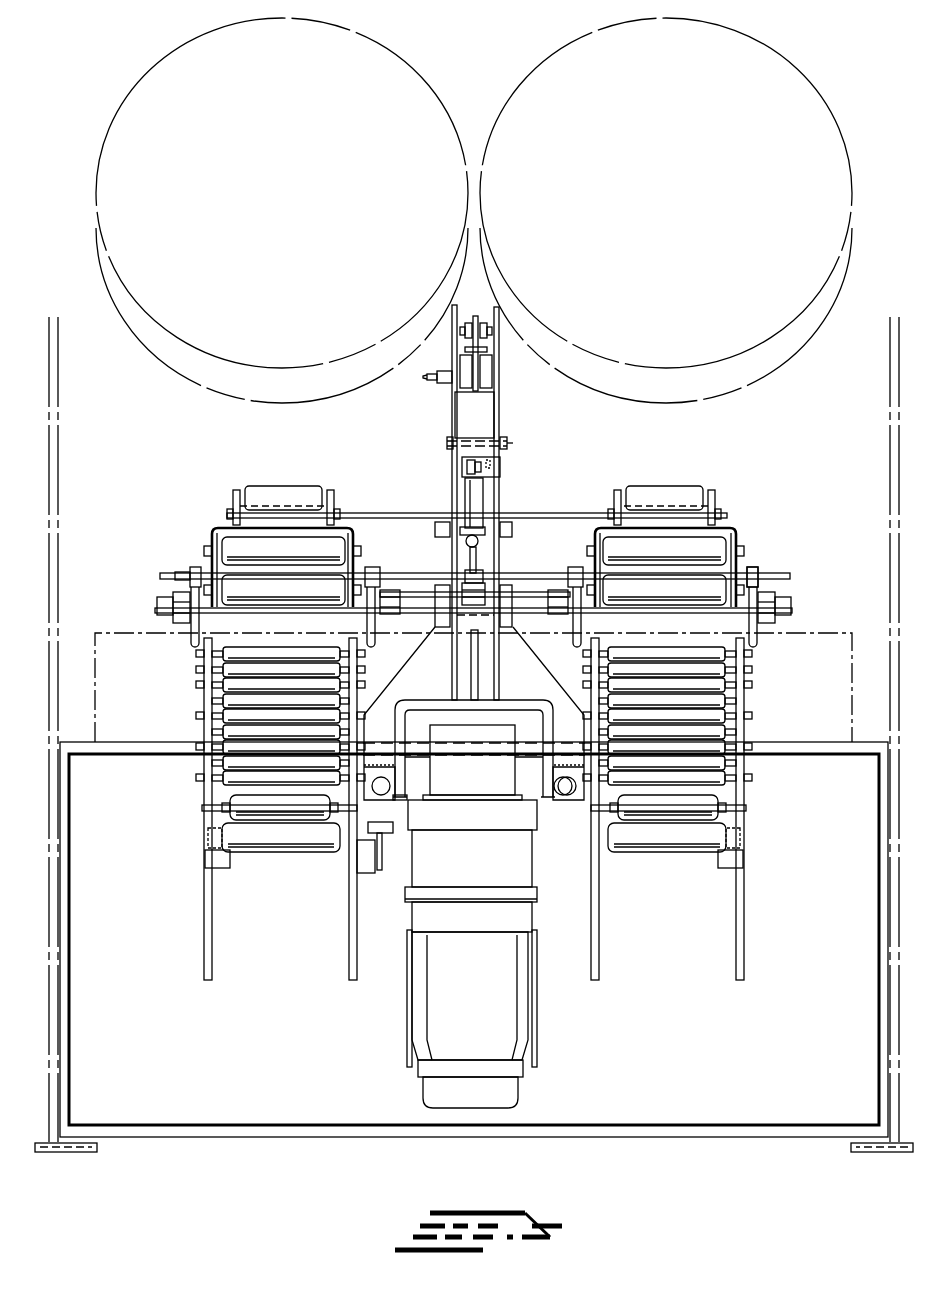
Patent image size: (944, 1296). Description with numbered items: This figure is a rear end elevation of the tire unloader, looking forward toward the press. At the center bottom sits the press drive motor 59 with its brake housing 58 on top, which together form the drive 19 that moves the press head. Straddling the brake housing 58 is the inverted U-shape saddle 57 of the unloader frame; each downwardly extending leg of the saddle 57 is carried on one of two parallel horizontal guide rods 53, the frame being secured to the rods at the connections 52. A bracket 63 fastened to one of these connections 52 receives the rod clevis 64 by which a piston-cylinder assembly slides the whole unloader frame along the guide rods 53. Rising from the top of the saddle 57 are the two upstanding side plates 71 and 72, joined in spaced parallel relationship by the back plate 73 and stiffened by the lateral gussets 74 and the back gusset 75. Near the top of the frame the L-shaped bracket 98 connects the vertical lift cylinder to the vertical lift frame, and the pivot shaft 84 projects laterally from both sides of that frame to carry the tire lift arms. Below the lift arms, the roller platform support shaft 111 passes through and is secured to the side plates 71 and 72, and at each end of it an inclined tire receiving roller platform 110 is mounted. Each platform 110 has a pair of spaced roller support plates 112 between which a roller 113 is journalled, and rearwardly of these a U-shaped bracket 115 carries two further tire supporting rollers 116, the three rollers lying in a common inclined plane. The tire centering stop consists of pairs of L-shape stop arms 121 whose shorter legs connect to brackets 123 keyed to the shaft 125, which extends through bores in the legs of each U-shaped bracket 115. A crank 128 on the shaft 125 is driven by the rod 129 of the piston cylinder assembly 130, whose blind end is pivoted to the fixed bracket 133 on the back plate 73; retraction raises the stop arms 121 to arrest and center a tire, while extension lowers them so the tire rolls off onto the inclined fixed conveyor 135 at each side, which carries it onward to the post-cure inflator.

The drive 19 is at (508, 1015).
The connection 52 is at (342, 796).
The horizontal guide rod 53 is at (563, 795).
The inverted U-shape saddle 57 is at (540, 782).
The brake housing 58 is at (472, 760).
The press drive motor 59 is at (472, 858).
The bracket 63 is at (388, 812).
The rod clevis 64 is at (388, 835).
The side plate 71 is at (450, 672).
The side plate 72 is at (494, 690).
The back plate 73 is at (488, 400).
The lateral gusset 74 is at (378, 700).
The back gusset 75 is at (478, 652).
The pivot shaft 84 is at (790, 605).
The L-shaped bracket 98 is at (476, 317).
The inclined tire receiving roller platform 110 is at (208, 525).
The roller platform support shaft 111 is at (558, 510).
The roller support plate 112 is at (237, 490).
The roller 113 is at (292, 494).
The U-shaped bracket 115 is at (210, 560).
The tire supporting roller 116 is at (340, 543).
The L-shape stop arm 121 is at (188, 640).
The bracket 123 is at (177, 570).
The shaft 125 is at (762, 570).
The crank 128 is at (490, 588).
The rod 129 is at (466, 560).
The piston cylinder assembly 130 is at (490, 497).
The fixed bracket 133 is at (492, 457).
The inclined fixed conveyor 135 is at (200, 798).